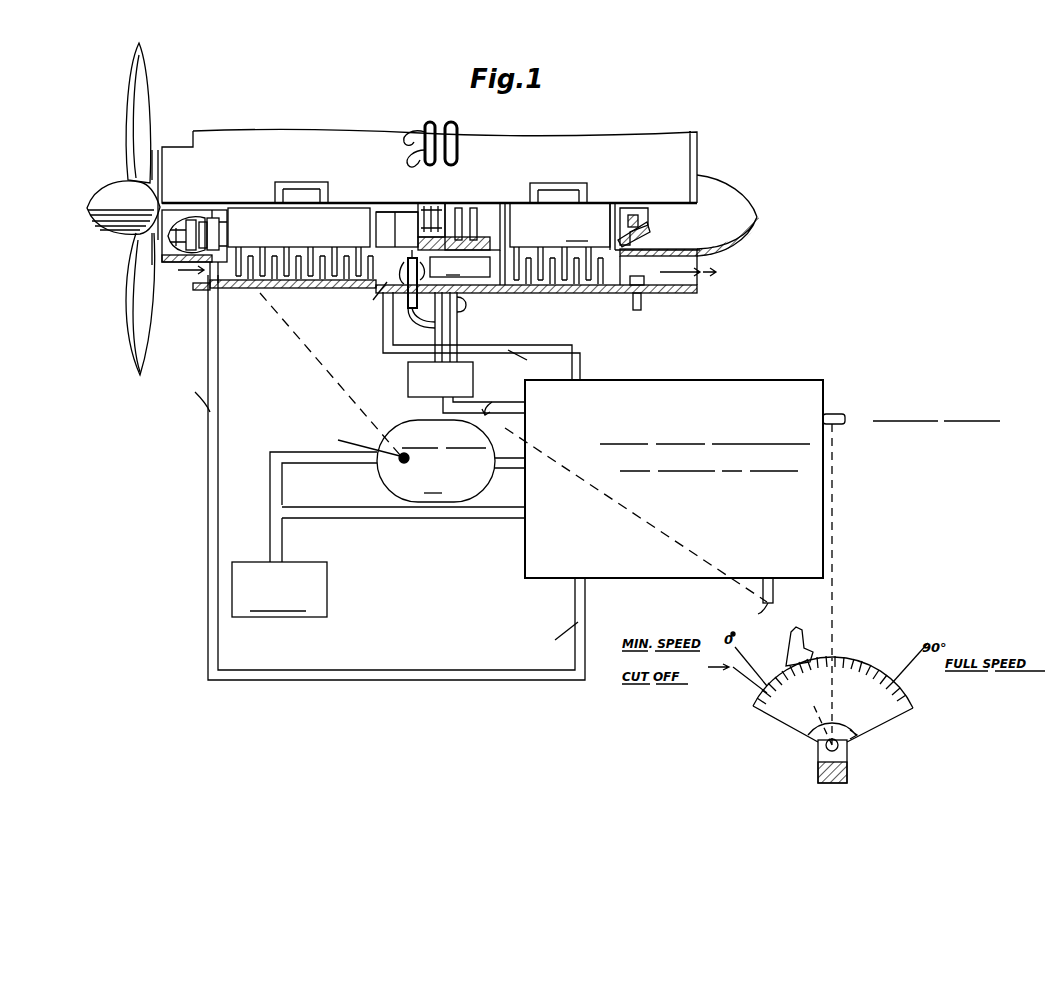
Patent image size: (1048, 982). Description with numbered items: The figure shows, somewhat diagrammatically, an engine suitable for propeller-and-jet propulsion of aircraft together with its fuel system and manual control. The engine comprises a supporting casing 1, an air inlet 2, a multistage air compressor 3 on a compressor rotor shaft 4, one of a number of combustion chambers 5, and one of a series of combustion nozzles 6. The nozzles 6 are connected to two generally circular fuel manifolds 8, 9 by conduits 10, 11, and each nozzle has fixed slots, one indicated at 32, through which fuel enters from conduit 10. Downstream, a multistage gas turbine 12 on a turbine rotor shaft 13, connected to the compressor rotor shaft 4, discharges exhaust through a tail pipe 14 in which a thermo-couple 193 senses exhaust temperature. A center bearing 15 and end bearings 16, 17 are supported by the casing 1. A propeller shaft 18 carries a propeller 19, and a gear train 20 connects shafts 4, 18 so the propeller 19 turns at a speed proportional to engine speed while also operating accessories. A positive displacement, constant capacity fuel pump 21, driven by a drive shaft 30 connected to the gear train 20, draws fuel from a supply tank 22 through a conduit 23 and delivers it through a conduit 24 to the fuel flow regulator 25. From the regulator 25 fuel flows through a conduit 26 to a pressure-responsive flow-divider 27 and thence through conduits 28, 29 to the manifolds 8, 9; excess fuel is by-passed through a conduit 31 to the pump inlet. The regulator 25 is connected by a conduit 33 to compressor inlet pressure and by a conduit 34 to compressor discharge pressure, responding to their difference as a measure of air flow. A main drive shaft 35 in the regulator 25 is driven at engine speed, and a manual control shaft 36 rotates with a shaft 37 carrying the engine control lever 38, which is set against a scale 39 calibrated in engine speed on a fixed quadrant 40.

The supporting casing 1 is at (620, 167).
The air inlet 2 is at (197, 290).
The multistage air compressor 3 is at (314, 283).
The compressor rotor shaft 4 is at (300, 243).
The combustion chamber 5 is at (460, 267).
The combustion nozzle 6 is at (410, 256).
The fuel manifold 8 is at (428, 122).
The fuel manifold 9 is at (454, 126).
The conduit 10 is at (414, 318).
The conduit 11 is at (462, 304).
The multistage gas turbine 12 is at (566, 287).
The turbine rotor shaft 13 is at (560, 225).
The tail pipe 14 is at (690, 280).
The center bearing 15 is at (437, 220).
The end bearing 16 is at (220, 228).
The end bearing 17 is at (632, 217).
The propeller shaft 18 is at (155, 170).
The propeller 19 is at (130, 297).
The gear train 20 is at (204, 222).
The fuel pump 21 is at (436, 461).
The supply tank 22 is at (328, 595).
The conduit 23 is at (277, 494).
The conduit 24 is at (510, 462).
The fuel flow regulator 25 is at (815, 374).
The conduit 26 is at (490, 425).
The pressure-responsive flow-divider 27 is at (474, 380).
The conduit 28 is at (437, 328).
The conduit 29 is at (460, 337).
The drive shaft 30 is at (410, 463).
The conduit 31 is at (472, 512).
The fixed slot 32 is at (426, 244).
The conduit 33 is at (220, 332).
The conduit 34 is at (583, 352).
The main drive shaft 35 is at (776, 599).
The manual control shaft 36 is at (836, 413).
The shaft 37 is at (850, 754).
The engine control lever 38 is at (802, 632).
The scale 39 is at (876, 676).
The fixed quadrant 40 is at (846, 664).
The thermo-couple 193 is at (643, 301).